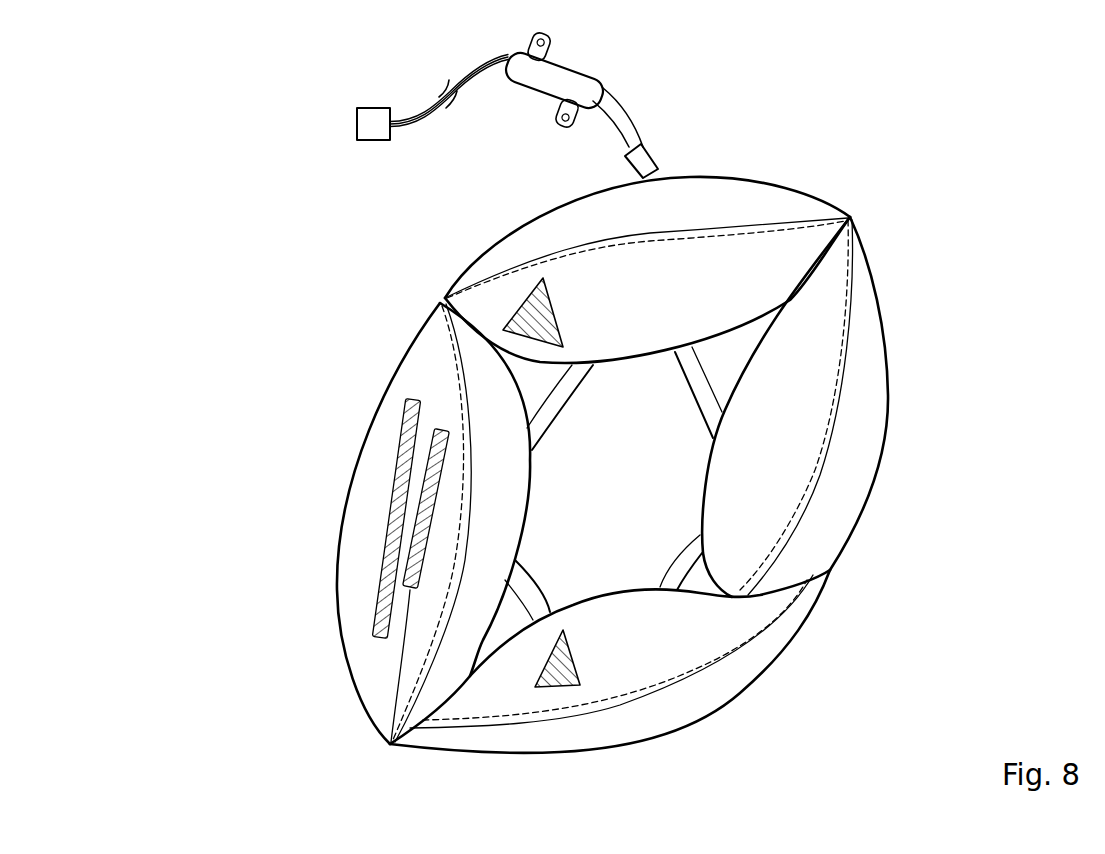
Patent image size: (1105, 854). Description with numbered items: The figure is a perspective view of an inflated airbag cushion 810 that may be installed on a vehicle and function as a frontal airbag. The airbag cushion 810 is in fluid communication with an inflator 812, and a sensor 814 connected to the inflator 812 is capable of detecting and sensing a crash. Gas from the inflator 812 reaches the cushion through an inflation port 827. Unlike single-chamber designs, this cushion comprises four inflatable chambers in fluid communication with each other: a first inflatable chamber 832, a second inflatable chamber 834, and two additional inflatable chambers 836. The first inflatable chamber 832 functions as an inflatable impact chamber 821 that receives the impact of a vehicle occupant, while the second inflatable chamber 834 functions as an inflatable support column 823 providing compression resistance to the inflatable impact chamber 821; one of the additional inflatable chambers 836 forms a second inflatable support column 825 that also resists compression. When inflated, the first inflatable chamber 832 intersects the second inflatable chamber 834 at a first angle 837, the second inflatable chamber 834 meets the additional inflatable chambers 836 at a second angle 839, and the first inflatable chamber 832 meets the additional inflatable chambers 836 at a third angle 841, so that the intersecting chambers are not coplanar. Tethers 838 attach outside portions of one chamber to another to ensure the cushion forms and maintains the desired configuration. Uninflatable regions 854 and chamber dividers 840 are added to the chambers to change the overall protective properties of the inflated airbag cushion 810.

The airbag cushion 810 is at (915, 300).
The inflator 812 is at (580, 75).
The sensor 814 is at (368, 108).
The inflatable impact chamber 821 is at (382, 532).
The inflatable support column 823 is at (623, 696).
The second inflatable support column 825 is at (805, 205).
The inflation port 827 is at (653, 160).
The first inflatable chamber 832 is at (347, 560).
The second inflatable chamber 834 is at (667, 723).
The additional inflatable chamber 836 is at (743, 212).
The first angle 837 is at (477, 673).
The tether 838 is at (543, 412).
The second angle 839 is at (721, 593).
The chamber divider 840 is at (390, 447).
The third angle 841 is at (497, 360).
The uninflatable region 854 is at (530, 300).